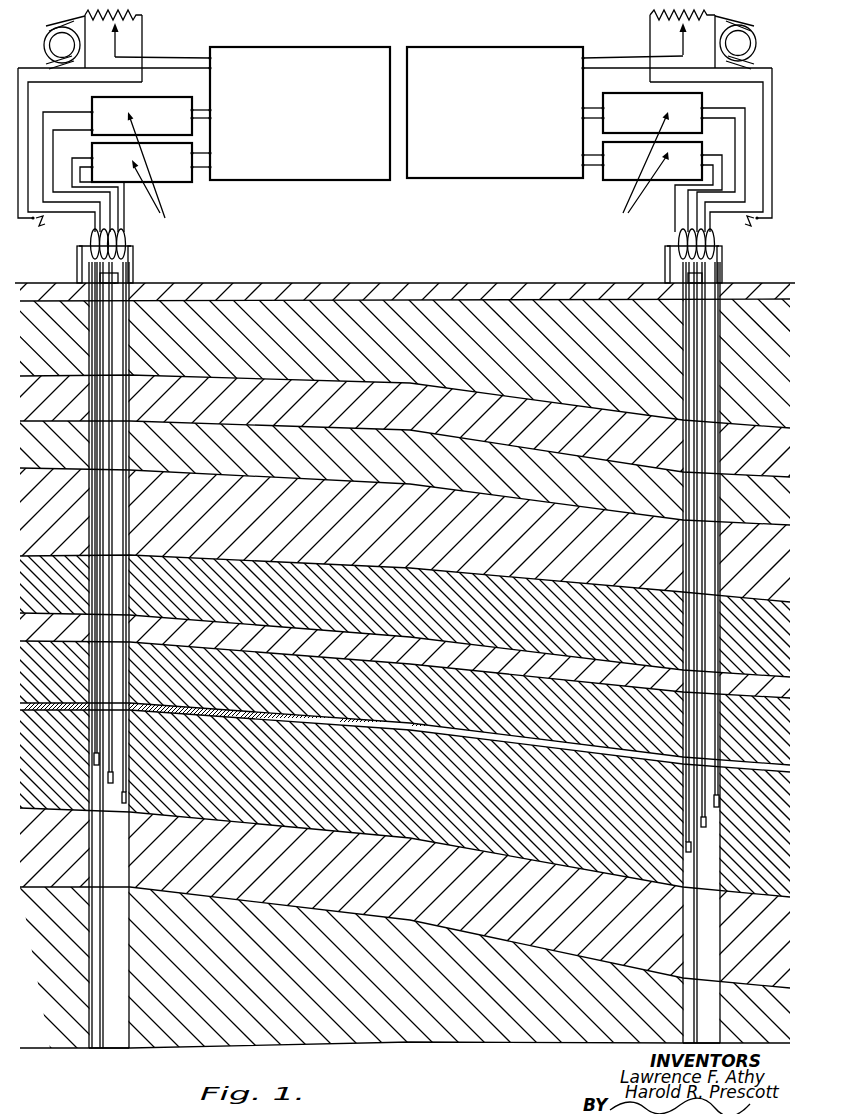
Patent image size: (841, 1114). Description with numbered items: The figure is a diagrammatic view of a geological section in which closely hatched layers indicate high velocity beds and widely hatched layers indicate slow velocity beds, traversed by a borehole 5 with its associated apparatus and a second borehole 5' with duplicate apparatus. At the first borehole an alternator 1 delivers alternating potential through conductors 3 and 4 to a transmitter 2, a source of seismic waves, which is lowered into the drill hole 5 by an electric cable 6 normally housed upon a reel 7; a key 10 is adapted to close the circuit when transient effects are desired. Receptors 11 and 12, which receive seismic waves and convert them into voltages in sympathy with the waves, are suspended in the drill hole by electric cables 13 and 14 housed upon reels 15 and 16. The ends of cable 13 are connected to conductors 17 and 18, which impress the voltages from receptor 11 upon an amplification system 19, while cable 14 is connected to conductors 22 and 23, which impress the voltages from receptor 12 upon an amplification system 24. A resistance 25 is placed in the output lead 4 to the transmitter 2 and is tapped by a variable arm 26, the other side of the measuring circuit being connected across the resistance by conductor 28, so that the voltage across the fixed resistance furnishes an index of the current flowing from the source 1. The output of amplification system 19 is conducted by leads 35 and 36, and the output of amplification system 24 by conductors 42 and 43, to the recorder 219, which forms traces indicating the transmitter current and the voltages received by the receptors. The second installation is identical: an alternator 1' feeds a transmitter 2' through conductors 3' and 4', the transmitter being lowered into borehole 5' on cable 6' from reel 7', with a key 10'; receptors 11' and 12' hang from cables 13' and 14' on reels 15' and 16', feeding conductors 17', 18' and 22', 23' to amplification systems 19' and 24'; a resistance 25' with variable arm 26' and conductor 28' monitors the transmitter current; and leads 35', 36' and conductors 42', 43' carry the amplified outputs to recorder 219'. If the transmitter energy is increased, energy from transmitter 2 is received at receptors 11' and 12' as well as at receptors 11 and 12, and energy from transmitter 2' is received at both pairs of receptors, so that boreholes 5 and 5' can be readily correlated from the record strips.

The alternator 1 is at (52, 42).
The transmitter 2 is at (127, 514).
The conductor 3 is at (24, 160).
The conductor 4 is at (85, 157).
The drill hole 5 is at (110, 1053).
The electric cable 6 is at (81, 655).
The reel 7 is at (69, 262).
The key 10 is at (52, 228).
The receptor 11 is at (137, 523).
The receptor 12 is at (145, 532).
The electric cable 13 is at (86, 278).
The electric cable 14 is at (161, 655).
The reel 15 is at (121, 266).
The reel 16 is at (152, 264).
The conductor 17 is at (71, 162).
The conductor 18 is at (85, 187).
The amplification system 19 is at (81, 179).
The conductor 22 is at (128, 242).
The conductor 23 is at (117, 198).
The amplification system 24 is at (194, 166).
The resistance 25 is at (128, 44).
The variable arm 26 is at (128, 40).
The conductor 28 is at (115, 75).
The lead 35 is at (214, 96).
The lead 36 is at (214, 126).
The conductor 42 is at (217, 171).
The conductor 43 is at (214, 151).
The recorder 219 is at (300, 102).
The alternator 1' is at (749, 42).
The transmitter 2' is at (685, 543).
The conductor 3' is at (774, 144).
The conductor 4' is at (720, 157).
The borehole 5' is at (673, 1045).
The electric cable 6' is at (730, 652).
The reel 7' is at (728, 253).
The key 10' is at (761, 233).
The receptor 11' is at (678, 551).
The receptor 12' is at (669, 560).
The electric cable 13' is at (669, 277).
The electric cable 14' is at (645, 652).
The reel 15' is at (713, 259).
The reel 16' is at (654, 264).
The conductor 17' is at (727, 159).
The conductor 18' is at (712, 180).
The amplification system 19' is at (716, 158).
The conductor 22' is at (679, 239).
The conductor 23' is at (679, 197).
The amplification system 24' is at (599, 164).
The resistance 25' is at (665, 43).
The variable arm 26' is at (697, 40).
The conductor 28' is at (676, 71).
The lead 35' is at (579, 94).
The lead 36' is at (575, 121).
The conductor 42' is at (578, 162).
The conductor 43' is at (579, 144).
The recorder 219' is at (495, 99).